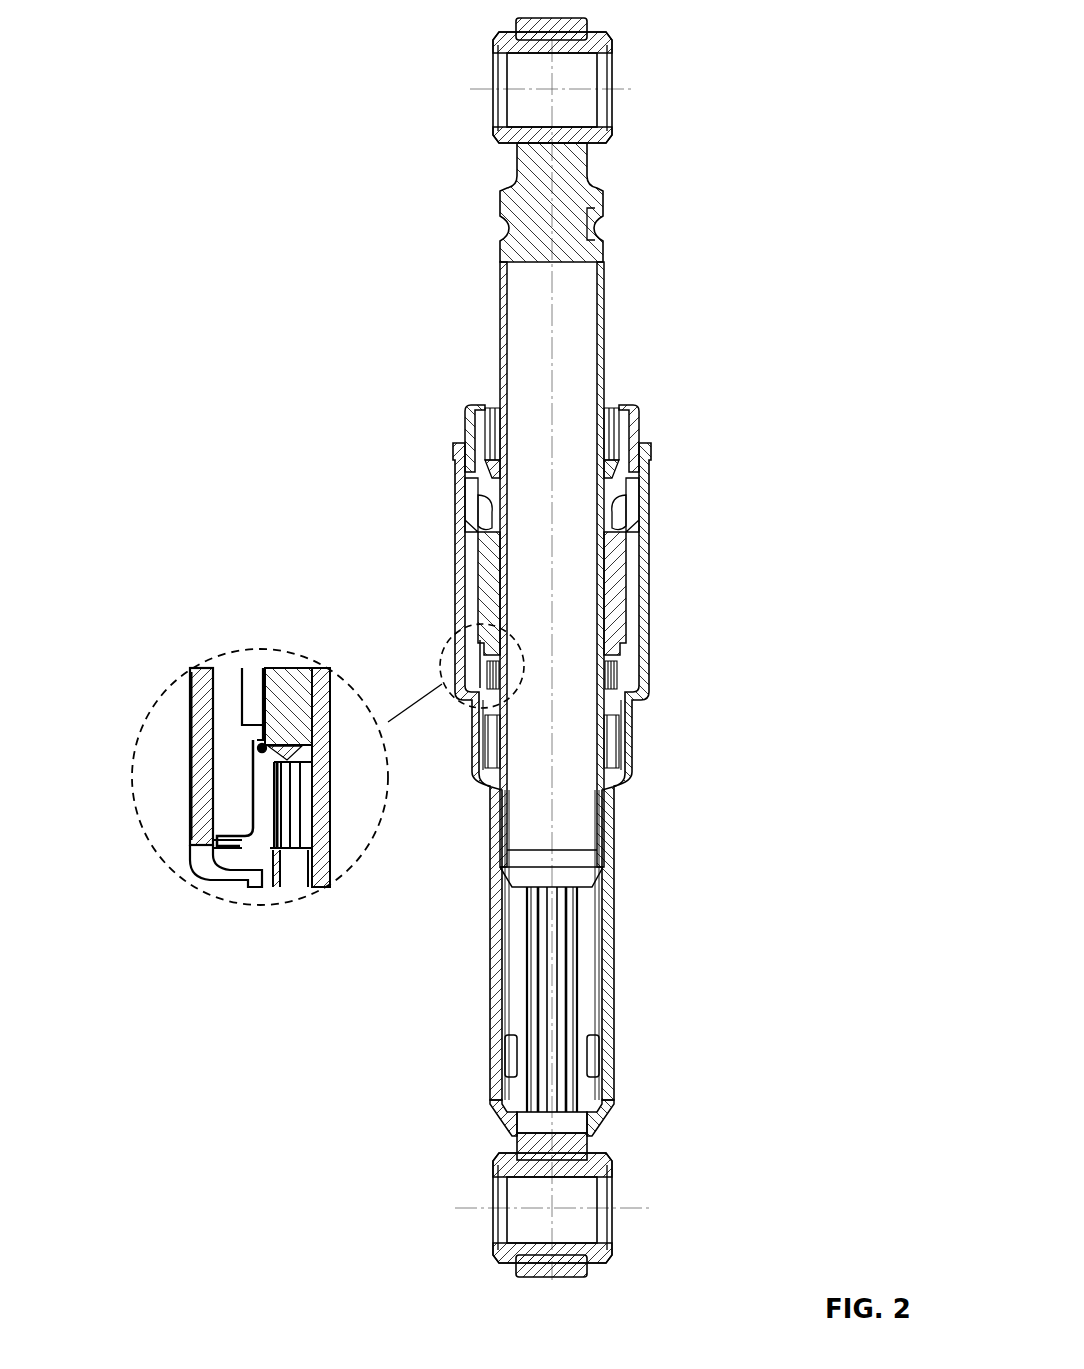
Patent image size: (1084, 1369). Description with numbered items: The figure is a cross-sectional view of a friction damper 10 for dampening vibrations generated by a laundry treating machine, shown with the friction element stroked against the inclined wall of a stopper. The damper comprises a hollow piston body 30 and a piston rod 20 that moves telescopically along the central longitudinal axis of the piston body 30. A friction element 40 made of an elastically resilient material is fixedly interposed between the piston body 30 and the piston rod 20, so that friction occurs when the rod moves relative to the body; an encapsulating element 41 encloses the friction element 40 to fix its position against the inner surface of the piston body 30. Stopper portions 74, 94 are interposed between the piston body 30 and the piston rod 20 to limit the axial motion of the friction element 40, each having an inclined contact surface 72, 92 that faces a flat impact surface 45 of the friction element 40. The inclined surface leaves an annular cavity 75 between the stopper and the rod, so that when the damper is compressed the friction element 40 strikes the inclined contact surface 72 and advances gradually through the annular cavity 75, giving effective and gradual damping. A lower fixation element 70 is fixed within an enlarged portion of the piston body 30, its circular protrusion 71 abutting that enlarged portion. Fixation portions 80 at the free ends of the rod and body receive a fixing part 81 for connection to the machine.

The friction damper 10 is at (498, 649).
The piston rod 20 is at (500, 330).
The piston body 30 is at (612, 903).
The friction element 40 is at (610, 602).
The encapsulating element 41 is at (245, 695).
The flat impact surface 45 is at (490, 532).
The lower fixation element 70 is at (263, 862).
The circular protrusion 71 is at (240, 842).
The inclined contact surface 72 is at (262, 750).
The stopper portion 74 is at (188, 800).
The annular cavity 75 is at (300, 748).
The fixation portion 80 is at (641, 28).
The fixing part 81 is at (512, 137).
The inclined contact surface 92 is at (620, 517).
The stopper portion 94 is at (620, 507).